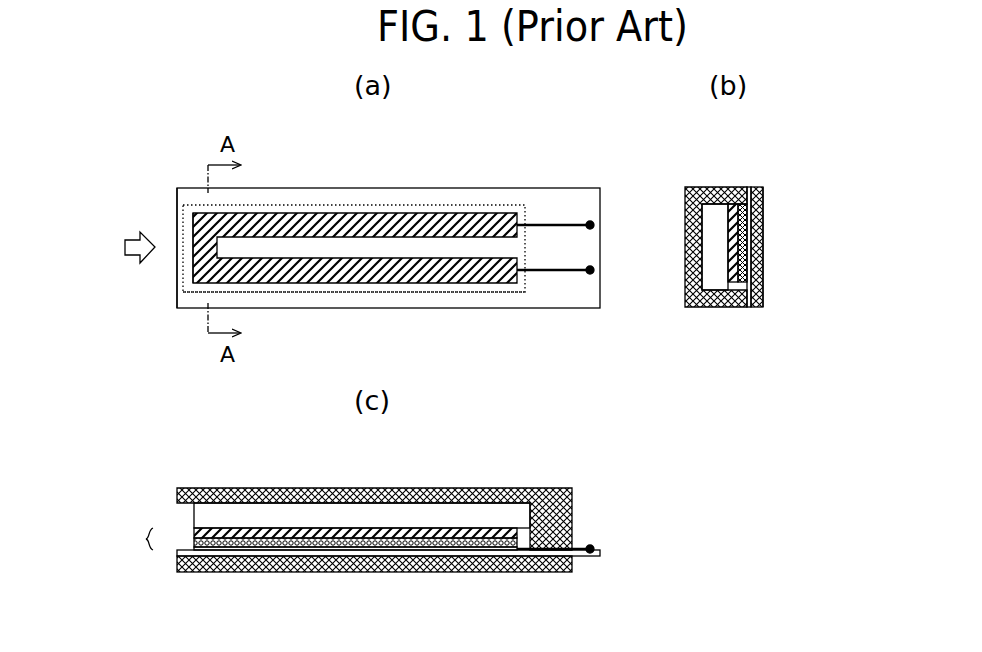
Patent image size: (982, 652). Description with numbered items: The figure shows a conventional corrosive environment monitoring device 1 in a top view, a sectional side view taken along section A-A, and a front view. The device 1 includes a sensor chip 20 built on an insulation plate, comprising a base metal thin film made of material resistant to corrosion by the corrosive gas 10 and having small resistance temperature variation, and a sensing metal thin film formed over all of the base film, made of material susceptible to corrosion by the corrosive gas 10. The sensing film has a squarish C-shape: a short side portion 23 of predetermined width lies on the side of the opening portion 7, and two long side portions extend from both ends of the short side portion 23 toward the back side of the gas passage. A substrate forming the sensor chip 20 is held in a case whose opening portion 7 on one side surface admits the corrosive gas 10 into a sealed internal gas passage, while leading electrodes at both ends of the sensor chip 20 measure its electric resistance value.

The corrosive environment monitoring device 1 is at (556, 184).
The opening portion 7 is at (177, 224).
The corrosive gas 10 is at (133, 236).
The sensor chip 20 is at (132, 541).
The short side portion 23 is at (193, 276).